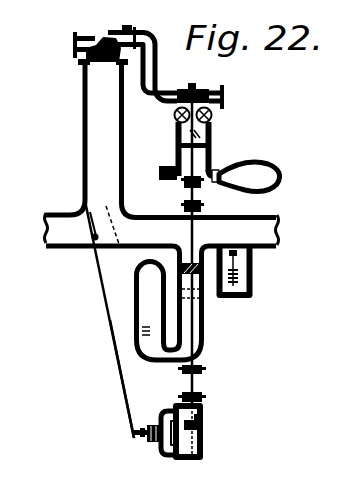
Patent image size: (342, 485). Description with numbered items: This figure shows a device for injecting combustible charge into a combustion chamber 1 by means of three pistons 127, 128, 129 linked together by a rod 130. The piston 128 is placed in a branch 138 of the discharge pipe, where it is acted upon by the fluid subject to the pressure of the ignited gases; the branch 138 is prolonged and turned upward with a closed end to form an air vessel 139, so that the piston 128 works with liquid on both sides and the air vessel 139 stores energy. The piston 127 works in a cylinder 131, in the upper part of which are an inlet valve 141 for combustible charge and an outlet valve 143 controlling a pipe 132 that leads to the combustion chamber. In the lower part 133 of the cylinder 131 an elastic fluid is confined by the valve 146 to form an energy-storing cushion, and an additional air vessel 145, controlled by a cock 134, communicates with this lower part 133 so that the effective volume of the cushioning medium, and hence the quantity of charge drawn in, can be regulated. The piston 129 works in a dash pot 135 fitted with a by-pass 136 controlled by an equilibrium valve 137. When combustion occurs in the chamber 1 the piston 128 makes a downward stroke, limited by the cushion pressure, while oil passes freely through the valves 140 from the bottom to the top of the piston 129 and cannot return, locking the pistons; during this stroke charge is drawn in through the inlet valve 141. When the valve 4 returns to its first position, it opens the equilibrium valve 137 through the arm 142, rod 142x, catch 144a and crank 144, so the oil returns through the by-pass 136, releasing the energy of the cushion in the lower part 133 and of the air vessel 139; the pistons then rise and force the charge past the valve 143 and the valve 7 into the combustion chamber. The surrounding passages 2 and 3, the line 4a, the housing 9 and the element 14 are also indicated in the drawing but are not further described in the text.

The combustion chamber 1 is at (103, 138).
The left duct 2 is at (83, 229).
The header duct 3 is at (199, 230).
The valve 4 is at (99, 215).
The damper axis 4a is at (121, 225).
The valve 7 is at (108, 66).
The float chamber 9 is at (252, 257).
The element 14 is at (332, 98).
The piston 127 is at (175, 148).
The piston 128 is at (204, 297).
The piston 129 is at (200, 433).
The rod 130 is at (181, 188).
The cylinder 131 is at (213, 134).
The pipe 132 is at (160, 71).
The lower part of cylinder 133 is at (210, 150).
The cock 134 is at (214, 183).
The dash pot 135 is at (202, 447).
The by-pass 136 is at (160, 452).
The equilibrium valve 137 is at (153, 440).
The branch 138 is at (205, 352).
The air vessel 139 is at (133, 304).
The valves 140 is at (200, 423).
The inlet valve 141 is at (213, 127).
The arm 142 is at (98, 268).
The rod 142x is at (118, 367).
The outlet valve 143 is at (176, 112).
The crank 144 is at (142, 426).
The catch 144a is at (136, 428).
The additional air vessel 145 is at (263, 184).
The valve 146 is at (160, 172).